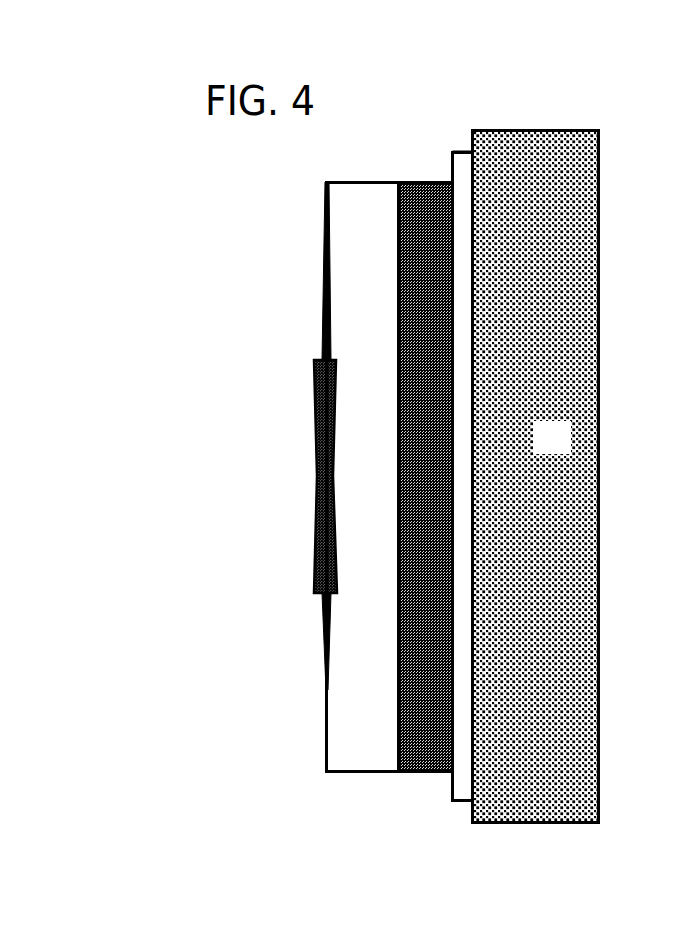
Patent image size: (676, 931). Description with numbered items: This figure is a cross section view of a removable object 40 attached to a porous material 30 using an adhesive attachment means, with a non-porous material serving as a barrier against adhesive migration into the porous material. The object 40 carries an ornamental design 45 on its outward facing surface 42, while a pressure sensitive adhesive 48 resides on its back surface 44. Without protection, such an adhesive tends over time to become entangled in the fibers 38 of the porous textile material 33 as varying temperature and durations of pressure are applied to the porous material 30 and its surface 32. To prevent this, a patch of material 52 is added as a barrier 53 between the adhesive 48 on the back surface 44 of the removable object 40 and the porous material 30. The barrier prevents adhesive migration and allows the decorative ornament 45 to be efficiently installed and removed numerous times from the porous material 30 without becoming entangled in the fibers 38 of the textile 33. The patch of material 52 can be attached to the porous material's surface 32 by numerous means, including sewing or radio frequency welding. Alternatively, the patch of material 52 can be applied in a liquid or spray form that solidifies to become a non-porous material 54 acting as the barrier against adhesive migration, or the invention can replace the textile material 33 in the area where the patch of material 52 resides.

The porous material 30 is at (501, 106).
The surface of the porous material 32 is at (472, 811).
The porous textile material 33 is at (565, 448).
The fibers 38 is at (547, 193).
The object 40 is at (357, 247).
The outward facing surface 42 is at (325, 730).
The back surface 44 is at (397, 612).
The ornamental design 45 is at (315, 453).
The pressure sensitive adhesive 48 is at (420, 700).
The patch of material 52 is at (462, 193).
The barrier 53 is at (451, 204).
The non-porous material 54 is at (463, 708).